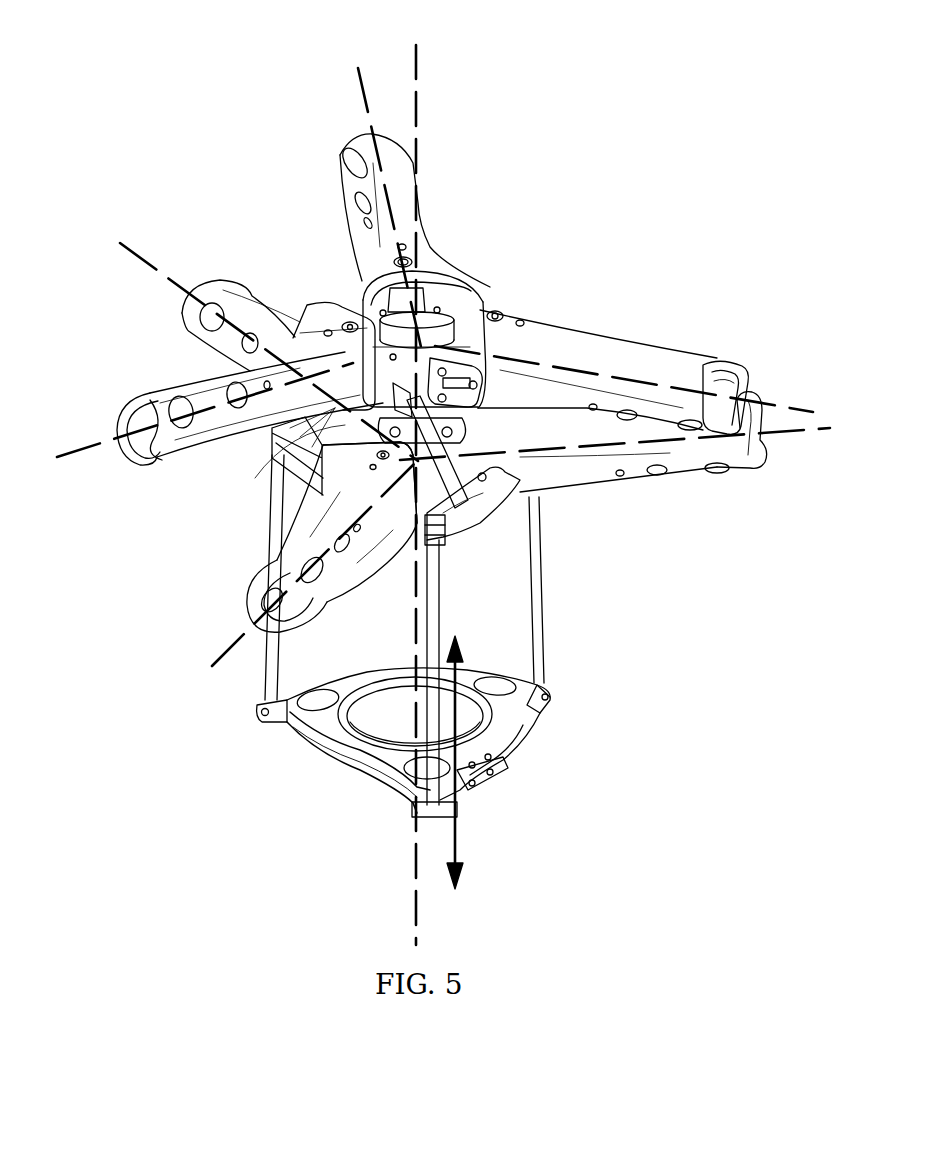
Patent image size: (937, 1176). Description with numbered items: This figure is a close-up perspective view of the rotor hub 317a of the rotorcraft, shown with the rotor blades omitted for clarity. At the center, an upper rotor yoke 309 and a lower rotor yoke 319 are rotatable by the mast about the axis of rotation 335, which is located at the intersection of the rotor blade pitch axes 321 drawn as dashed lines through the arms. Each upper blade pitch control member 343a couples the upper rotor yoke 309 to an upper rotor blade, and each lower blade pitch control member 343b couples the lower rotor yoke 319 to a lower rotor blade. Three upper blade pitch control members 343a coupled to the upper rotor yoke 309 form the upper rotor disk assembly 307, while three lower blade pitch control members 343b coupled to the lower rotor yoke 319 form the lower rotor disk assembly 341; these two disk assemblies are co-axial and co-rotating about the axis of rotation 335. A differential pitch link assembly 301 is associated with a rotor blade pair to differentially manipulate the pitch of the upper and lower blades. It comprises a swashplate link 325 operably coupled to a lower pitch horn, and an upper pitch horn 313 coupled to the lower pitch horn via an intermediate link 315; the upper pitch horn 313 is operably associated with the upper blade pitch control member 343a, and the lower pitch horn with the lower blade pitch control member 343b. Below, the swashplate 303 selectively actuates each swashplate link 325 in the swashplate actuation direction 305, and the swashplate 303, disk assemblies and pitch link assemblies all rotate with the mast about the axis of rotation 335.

The differential pitch link assembly 301 is at (480, 534).
The swashplate 303 is at (320, 773).
The swashplate actuation direction 305 is at (458, 840).
The upper rotor disk assembly 307 is at (486, 193).
The upper rotor yoke 309 is at (443, 298).
The upper pitch horn 313 is at (478, 398).
The intermediate link 315 is at (427, 498).
The rotor hub 317a is at (188, 57).
The lower rotor yoke 319 is at (300, 460).
The rotor blade pitch axes 321 is at (357, 83).
The swashplate link 325 is at (277, 648).
The axis of rotation 335 is at (418, 58).
The lower rotor disk assembly 341 is at (570, 507).
The upper blade pitch control member 343a is at (340, 173).
The lower blade pitch control member 343b is at (213, 290).